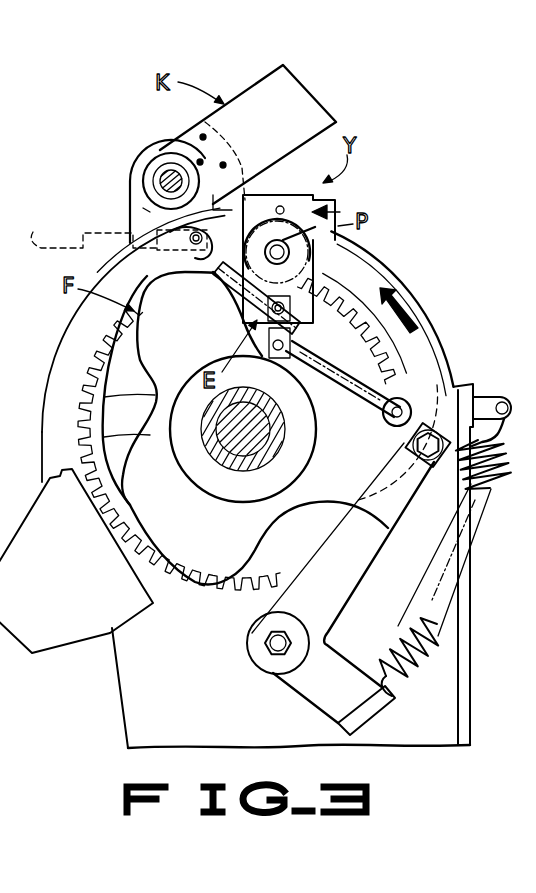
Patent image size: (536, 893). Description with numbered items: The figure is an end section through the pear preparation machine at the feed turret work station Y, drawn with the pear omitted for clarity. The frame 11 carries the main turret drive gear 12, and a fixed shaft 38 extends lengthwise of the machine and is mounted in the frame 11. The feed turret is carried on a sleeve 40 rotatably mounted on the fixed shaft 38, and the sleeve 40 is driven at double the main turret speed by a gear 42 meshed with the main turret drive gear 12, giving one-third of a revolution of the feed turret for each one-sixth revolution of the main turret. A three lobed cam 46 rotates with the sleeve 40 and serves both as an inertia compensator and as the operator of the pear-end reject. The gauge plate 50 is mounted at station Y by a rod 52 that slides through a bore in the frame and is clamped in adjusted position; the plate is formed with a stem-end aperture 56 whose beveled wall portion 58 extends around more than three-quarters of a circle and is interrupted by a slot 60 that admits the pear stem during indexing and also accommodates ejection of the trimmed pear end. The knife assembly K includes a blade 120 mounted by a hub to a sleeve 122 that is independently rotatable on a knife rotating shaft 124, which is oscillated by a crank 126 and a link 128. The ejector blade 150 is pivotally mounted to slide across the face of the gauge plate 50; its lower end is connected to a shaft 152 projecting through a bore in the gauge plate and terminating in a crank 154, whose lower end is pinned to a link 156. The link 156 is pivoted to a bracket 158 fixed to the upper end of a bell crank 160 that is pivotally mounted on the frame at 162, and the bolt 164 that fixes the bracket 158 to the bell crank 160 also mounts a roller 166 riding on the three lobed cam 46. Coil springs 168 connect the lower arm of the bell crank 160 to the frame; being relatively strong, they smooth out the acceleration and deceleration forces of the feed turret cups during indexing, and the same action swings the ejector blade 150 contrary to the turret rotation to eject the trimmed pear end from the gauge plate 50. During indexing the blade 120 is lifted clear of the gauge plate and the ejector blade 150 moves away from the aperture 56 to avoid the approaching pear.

The frame 11 is at (400, 270).
The main turret drive gear 12 is at (78, 589).
The fixed shaft 38 is at (242, 444).
The sleeve 40 is at (243, 470).
The gear 42 is at (90, 368).
The three lobed cam 46 is at (210, 352).
The gauge plate 50 is at (340, 209).
The rod 52 is at (280, 208).
The stem-end aperture 56 is at (285, 260).
The beveled wall portion 58 is at (267, 247).
The slot 60 is at (309, 275).
The blade 120 is at (310, 115).
The sleeve 122 is at (157, 170).
The knife rotating shaft 124 is at (160, 180).
The crank 126 is at (143, 208).
The link 128 is at (94, 230).
The ejector blade 150 is at (247, 285).
The shaft 152 is at (273, 312).
The crank 154 is at (290, 343).
The link 156 is at (352, 400).
The bracket 158 is at (412, 447).
The bell crank 160 is at (346, 525).
The pivot 162 is at (265, 641).
The bolt 164 is at (262, 652).
The roller 166 is at (436, 392).
The coil springs 168 is at (393, 625).